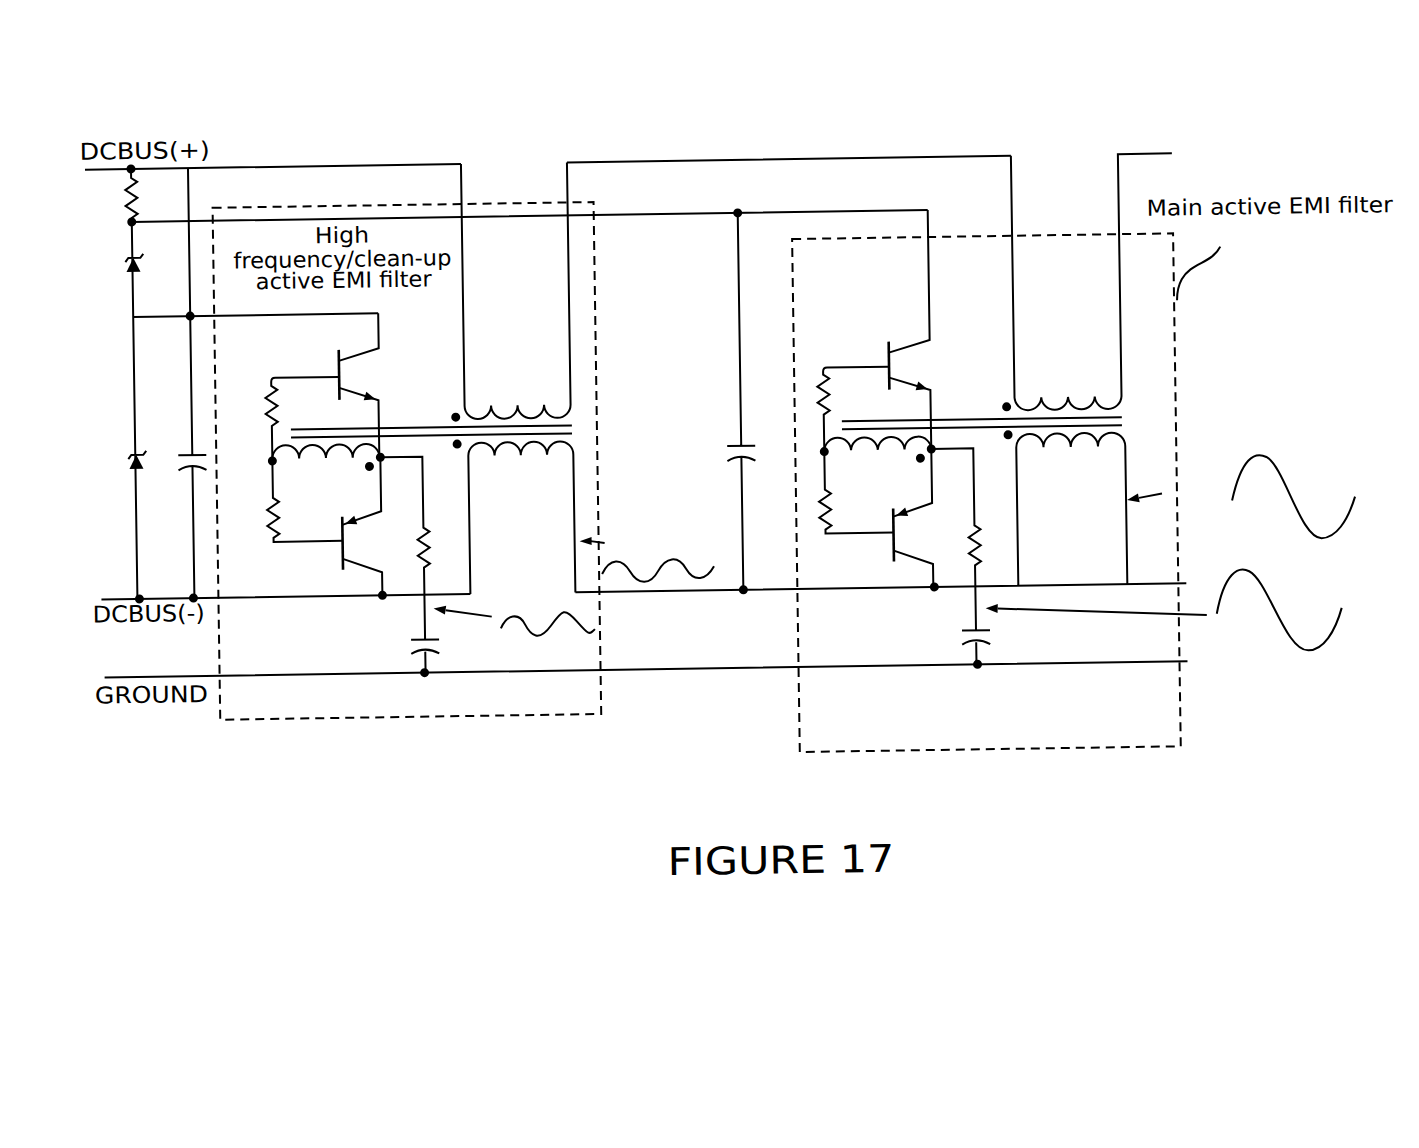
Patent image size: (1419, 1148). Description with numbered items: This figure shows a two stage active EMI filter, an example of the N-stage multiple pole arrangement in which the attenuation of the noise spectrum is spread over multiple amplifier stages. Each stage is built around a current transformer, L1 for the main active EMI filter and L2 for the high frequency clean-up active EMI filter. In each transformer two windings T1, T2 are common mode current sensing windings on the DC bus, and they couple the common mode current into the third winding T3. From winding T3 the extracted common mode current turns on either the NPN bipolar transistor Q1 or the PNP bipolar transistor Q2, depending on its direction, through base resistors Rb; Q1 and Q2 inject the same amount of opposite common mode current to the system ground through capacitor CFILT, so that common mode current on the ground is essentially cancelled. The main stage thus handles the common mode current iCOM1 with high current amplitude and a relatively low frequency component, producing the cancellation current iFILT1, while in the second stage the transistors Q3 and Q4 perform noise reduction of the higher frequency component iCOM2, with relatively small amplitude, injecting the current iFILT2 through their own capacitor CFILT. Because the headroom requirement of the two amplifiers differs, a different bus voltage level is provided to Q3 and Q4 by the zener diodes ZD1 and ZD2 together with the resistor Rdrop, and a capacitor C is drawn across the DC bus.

The resistor Rdrop is at (104, 196).
The zener diode ZD1 is at (112, 270).
The zener diode ZD2 is at (117, 458).
The capacitor C is at (477, 380).
The NPN bipolar transistor Q1 is at (913, 330).
The PNP bipolar transistor Q2 is at (917, 518).
The transistor Q3 is at (362, 385).
The transistor Q4 is at (366, 526).
The base resistor Rb is at (579, 454).
The third winding T3 is at (602, 461).
The main stage transformer L1 is at (981, 413).
The high frequency stage transformer L2 is at (431, 422).
The common mode current sensing winding T1 is at (818, 286).
The common mode current sensing winding T2 is at (797, 512).
The capacitor CFILT is at (710, 562).
The common mode current iCOM1 is at (1240, 497).
The common mode current iCOM2 is at (647, 557).
The filter current iFILT1 is at (1163, 611).
The filter current iFILT2 is at (515, 632).